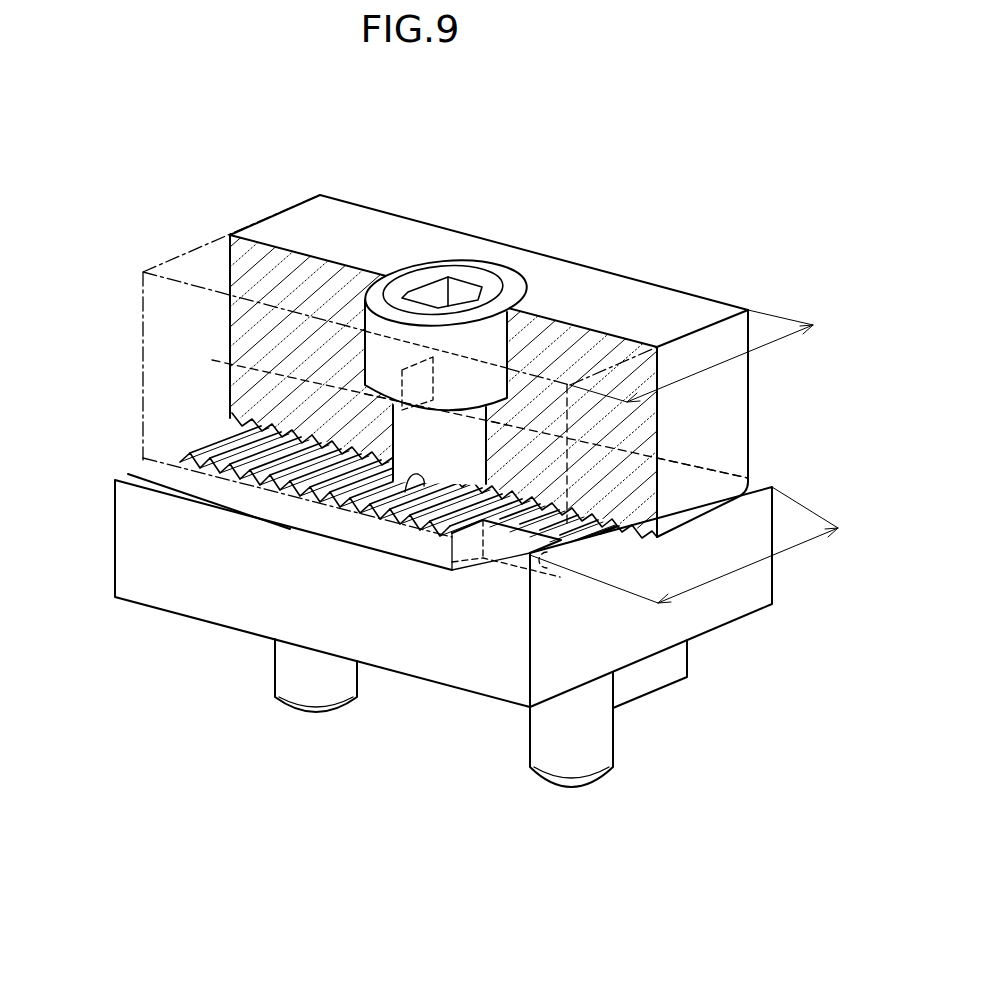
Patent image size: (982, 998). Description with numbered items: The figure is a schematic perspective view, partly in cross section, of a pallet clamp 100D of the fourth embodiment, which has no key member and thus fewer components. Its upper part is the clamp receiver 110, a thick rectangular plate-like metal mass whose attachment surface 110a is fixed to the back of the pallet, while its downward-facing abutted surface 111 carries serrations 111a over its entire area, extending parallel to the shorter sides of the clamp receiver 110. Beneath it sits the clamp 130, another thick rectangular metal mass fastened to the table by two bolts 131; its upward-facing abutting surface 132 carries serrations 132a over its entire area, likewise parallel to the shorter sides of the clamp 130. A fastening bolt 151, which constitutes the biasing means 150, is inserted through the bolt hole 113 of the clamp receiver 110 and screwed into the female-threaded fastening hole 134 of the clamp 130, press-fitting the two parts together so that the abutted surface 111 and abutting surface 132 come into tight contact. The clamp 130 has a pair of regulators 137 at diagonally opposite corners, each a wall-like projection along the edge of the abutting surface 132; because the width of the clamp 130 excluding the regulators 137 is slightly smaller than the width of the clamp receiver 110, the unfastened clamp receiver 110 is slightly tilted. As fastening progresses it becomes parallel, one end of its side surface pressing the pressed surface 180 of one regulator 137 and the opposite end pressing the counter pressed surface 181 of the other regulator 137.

The pallet clamp 100D is at (563, 133).
The clamp receiver 110 is at (380, 208).
The attachment surface 110a is at (675, 308).
The abutted surface 111 is at (707, 507).
The serrations 111a is at (257, 428).
The bolt hole 113 is at (497, 347).
The clamp 130 is at (776, 570).
The bolts 131 is at (317, 702).
The abutting surface 132 is at (600, 540).
The serrations 132a is at (215, 445).
The fastening hole 134 is at (405, 492).
The regulator 137 is at (365, 330).
The biasing means 150 is at (474, 393).
The fastening bolt 151 is at (492, 290).
The pressed surface 180 is at (451, 410).
The counter pressed surface 181 is at (563, 578).